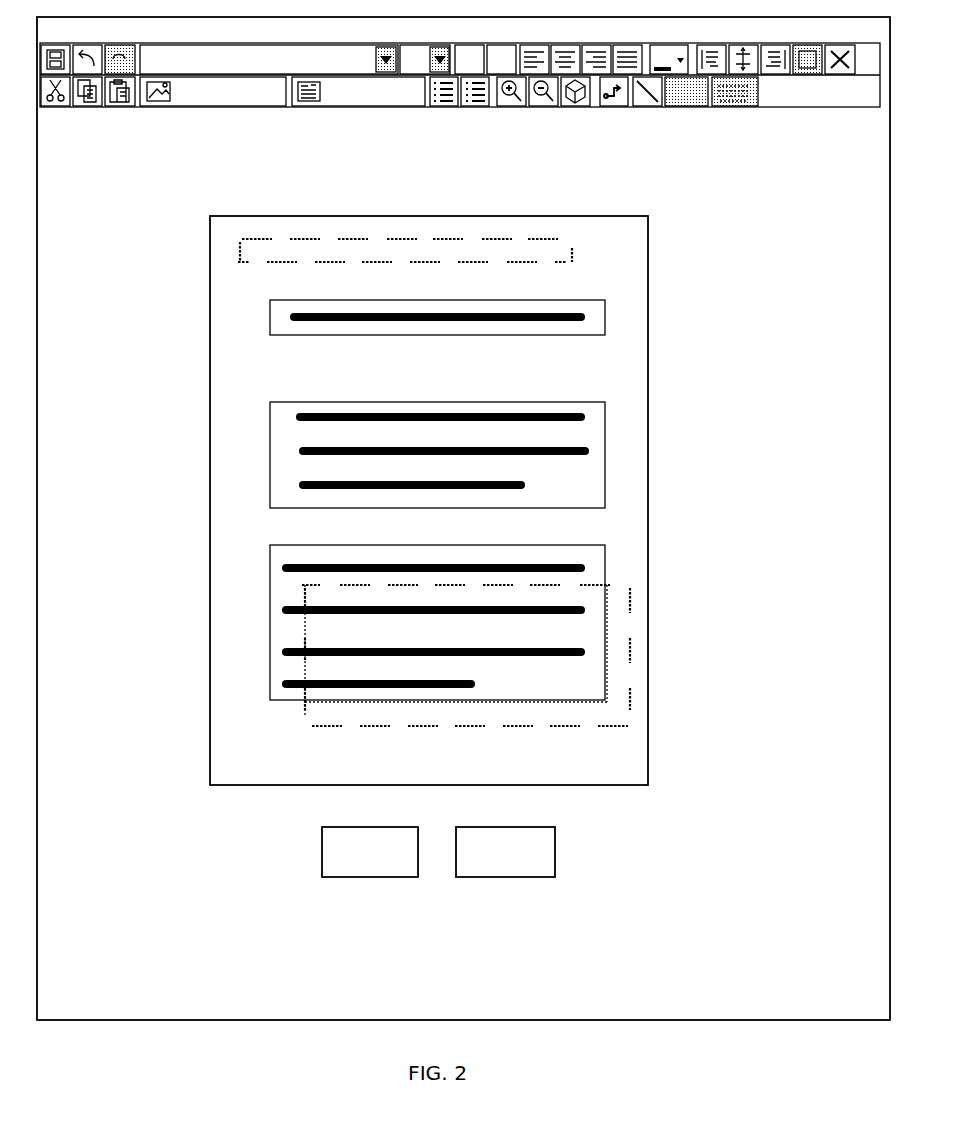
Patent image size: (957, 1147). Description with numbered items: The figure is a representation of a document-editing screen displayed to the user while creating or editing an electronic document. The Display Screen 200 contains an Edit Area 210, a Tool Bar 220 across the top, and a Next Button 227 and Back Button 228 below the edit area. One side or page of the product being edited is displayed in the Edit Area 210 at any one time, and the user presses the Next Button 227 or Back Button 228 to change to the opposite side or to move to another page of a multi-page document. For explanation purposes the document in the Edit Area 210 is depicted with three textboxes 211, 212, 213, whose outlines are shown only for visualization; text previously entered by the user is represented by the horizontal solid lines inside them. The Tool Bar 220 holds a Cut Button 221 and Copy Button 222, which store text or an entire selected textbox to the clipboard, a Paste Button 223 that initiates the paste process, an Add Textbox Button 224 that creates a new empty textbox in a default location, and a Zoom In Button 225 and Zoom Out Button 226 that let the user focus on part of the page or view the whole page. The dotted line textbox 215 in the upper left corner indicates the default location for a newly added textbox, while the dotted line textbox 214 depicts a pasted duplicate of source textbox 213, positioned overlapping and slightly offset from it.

The display screen 200 is at (463, 518).
The edit area 210 is at (429, 500).
The textbox 211 is at (471, 337).
The textbox 212 is at (351, 401).
The textbox 213 is at (351, 545).
The dotted line textbox 214 is at (386, 728).
The dotted line textbox 215 is at (549, 270).
The tool bar 220 is at (460, 124).
The cut button 221 is at (50, 114).
The copy button 222 is at (87, 114).
The paste button 223 is at (121, 114).
The add textbox button 224 is at (318, 114).
The zoom in button 225 is at (510, 114).
The zoom out button 226 is at (545, 114).
The next button 227 is at (486, 879).
The back button 228 is at (390, 879).